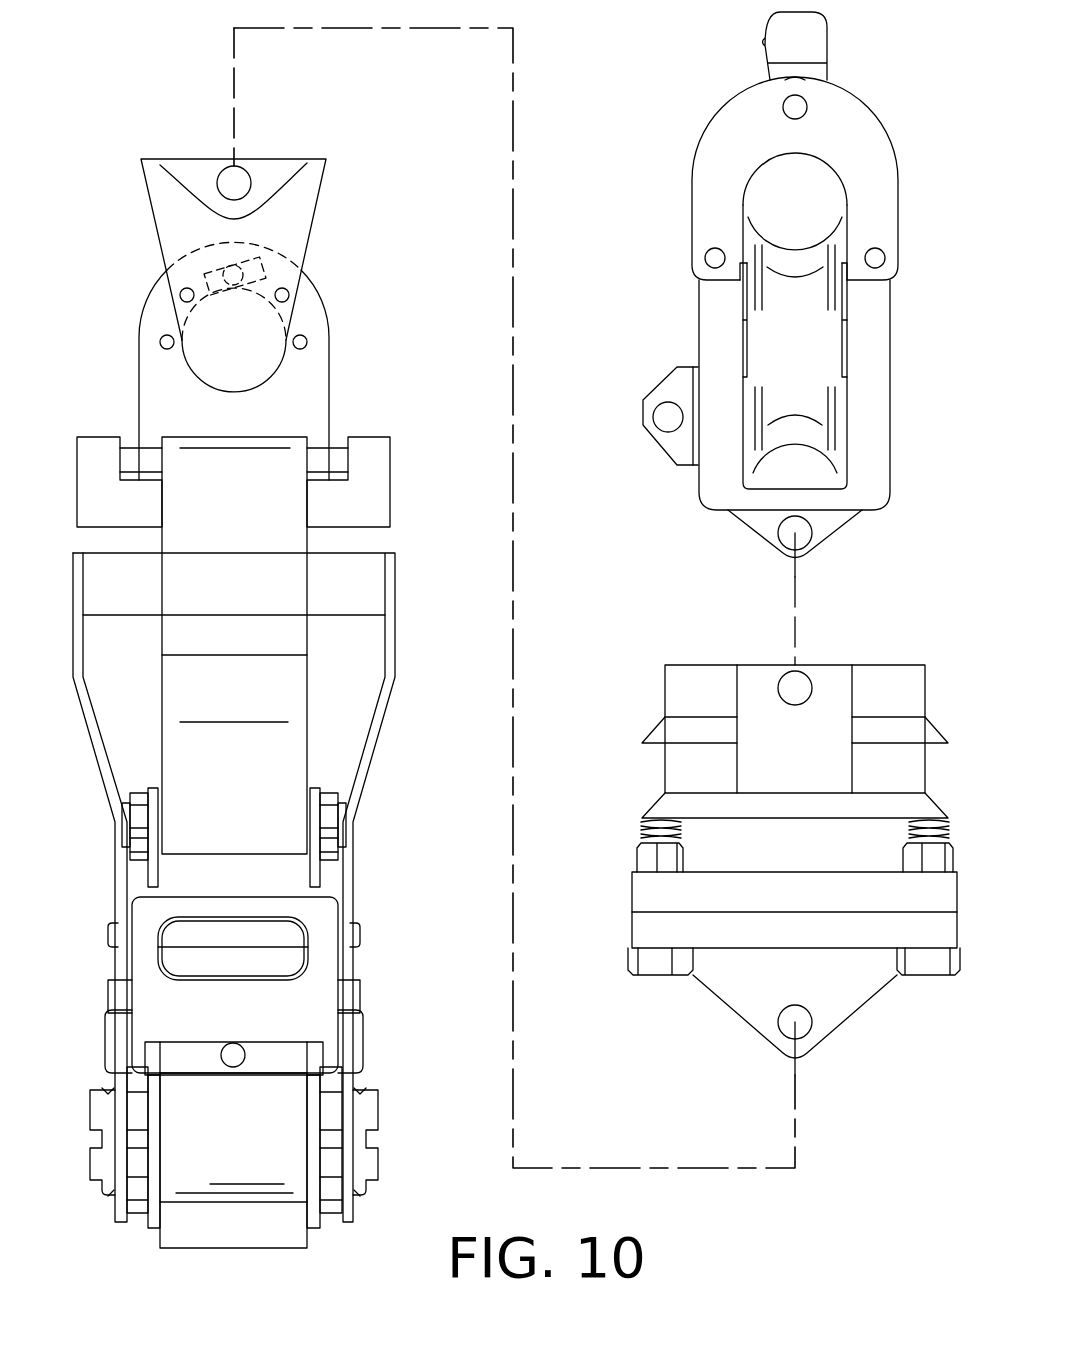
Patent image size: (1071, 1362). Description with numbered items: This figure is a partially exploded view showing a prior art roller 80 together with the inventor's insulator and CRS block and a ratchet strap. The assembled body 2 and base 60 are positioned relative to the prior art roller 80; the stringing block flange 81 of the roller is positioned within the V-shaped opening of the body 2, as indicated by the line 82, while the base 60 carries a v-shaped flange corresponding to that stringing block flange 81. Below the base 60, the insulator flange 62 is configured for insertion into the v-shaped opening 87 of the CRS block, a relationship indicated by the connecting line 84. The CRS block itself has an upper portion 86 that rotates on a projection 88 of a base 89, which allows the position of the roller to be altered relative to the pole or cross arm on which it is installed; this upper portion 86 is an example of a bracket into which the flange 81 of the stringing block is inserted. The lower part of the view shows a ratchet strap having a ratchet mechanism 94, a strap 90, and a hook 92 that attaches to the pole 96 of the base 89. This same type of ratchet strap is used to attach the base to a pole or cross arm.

The body 2 is at (650, 635).
The base 60 is at (650, 1014).
The insulator flange 62 is at (845, 997).
The prior art roller 80 is at (701, 78).
The stringing block flange 81 is at (830, 523).
The line 82 is at (795, 600).
The connection line 84 is at (653, 1168).
The upper portion 86 is at (316, 142).
The v-shaped opening 87 is at (193, 168).
The projection 88 is at (148, 320).
The base 89 is at (354, 362).
The strap 90 is at (310, 525).
The hook 92 is at (165, 443).
The ratchet mechanism 94 is at (110, 1033).
The pole 96 is at (337, 455).